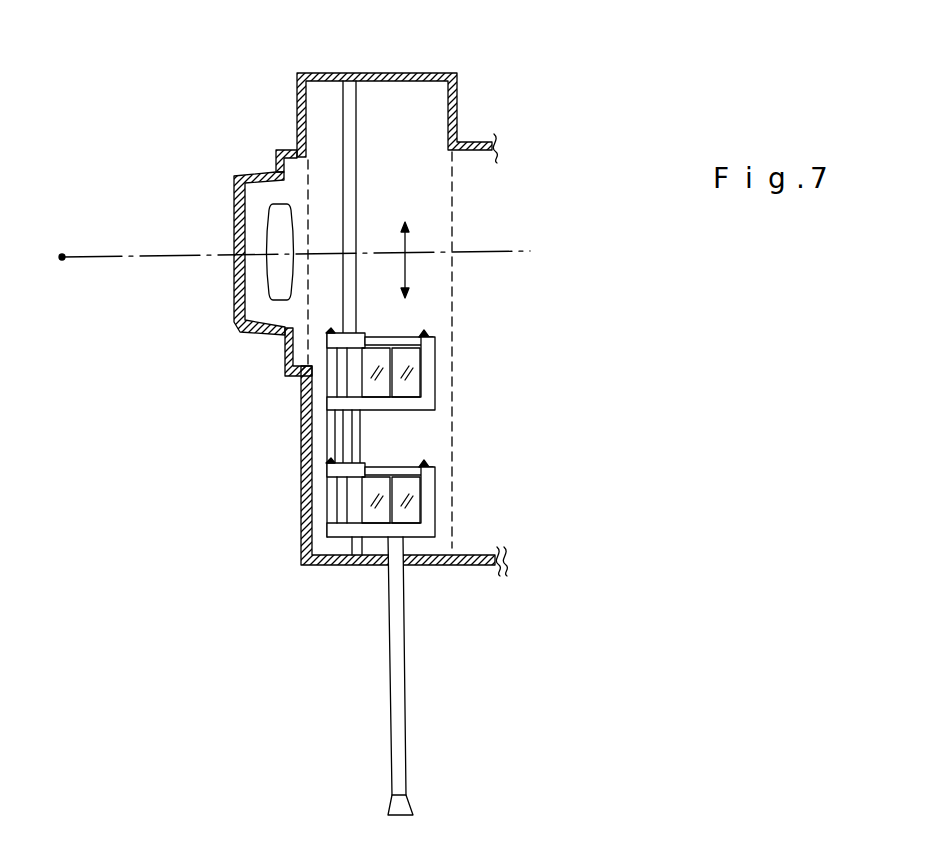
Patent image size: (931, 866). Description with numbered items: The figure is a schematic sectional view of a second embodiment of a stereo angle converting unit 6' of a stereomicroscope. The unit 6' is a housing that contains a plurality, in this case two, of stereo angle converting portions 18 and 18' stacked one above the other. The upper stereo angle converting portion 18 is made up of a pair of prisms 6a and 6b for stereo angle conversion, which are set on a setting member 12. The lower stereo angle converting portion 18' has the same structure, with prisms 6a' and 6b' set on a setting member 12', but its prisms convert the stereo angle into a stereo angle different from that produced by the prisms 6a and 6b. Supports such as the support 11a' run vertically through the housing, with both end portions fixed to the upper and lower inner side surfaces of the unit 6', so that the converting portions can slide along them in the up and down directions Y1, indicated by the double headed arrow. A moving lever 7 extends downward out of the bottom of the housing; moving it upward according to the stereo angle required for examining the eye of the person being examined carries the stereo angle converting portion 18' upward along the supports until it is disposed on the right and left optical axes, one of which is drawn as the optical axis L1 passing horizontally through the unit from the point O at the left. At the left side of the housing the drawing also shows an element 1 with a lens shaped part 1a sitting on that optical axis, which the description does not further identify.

The lens barrel 1 is at (253, 168).
The lens 1a is at (276, 306).
The stereo angle converting unit 6' is at (402, 288).
The prism 6a is at (479, 371).
The prism 6b is at (406, 372).
The prism 6a' is at (504, 502).
The prism 6b' is at (406, 500).
The moving lever 7 is at (406, 733).
The support 11a' is at (288, 166).
The setting member 12 is at (433, 358).
The setting member 12' is at (460, 495).
The stereo angle converting portion 18 is at (461, 397).
The stereo angle converting portion 18' is at (486, 470).
The optical axis origin O is at (62, 254).
The optical axis L1 is at (167, 253).
The up and down directions Y1 is at (407, 242).